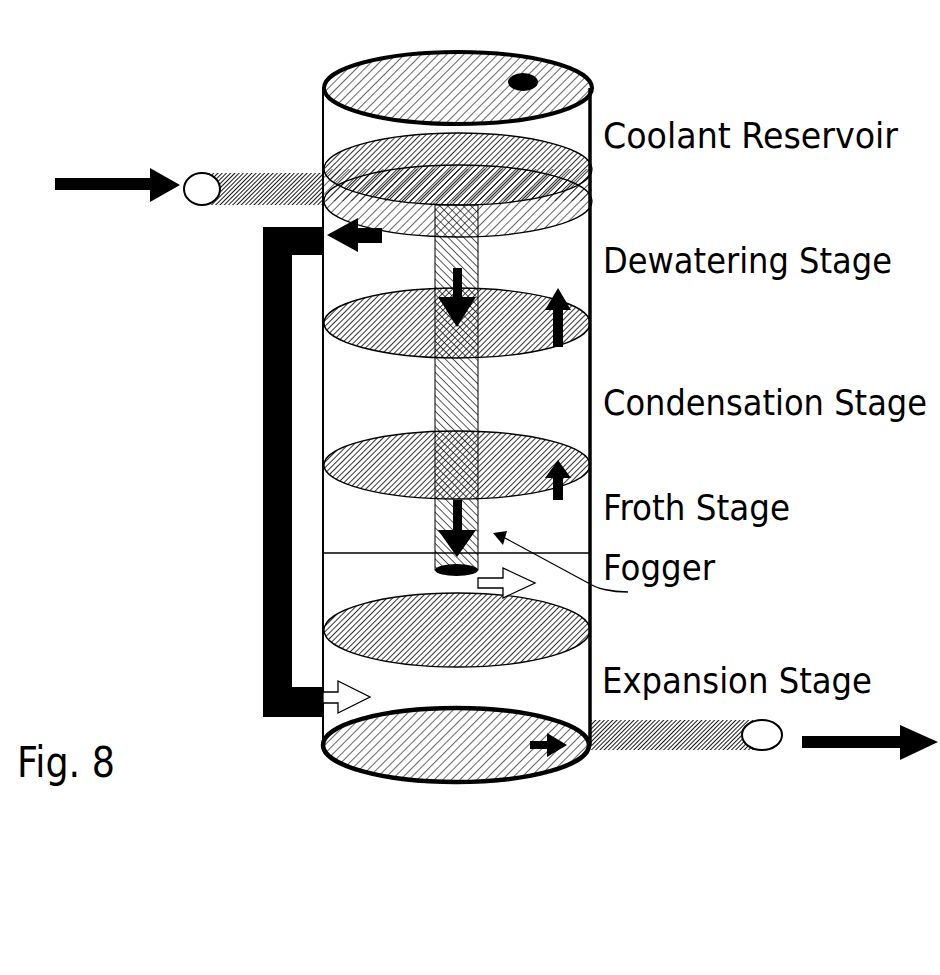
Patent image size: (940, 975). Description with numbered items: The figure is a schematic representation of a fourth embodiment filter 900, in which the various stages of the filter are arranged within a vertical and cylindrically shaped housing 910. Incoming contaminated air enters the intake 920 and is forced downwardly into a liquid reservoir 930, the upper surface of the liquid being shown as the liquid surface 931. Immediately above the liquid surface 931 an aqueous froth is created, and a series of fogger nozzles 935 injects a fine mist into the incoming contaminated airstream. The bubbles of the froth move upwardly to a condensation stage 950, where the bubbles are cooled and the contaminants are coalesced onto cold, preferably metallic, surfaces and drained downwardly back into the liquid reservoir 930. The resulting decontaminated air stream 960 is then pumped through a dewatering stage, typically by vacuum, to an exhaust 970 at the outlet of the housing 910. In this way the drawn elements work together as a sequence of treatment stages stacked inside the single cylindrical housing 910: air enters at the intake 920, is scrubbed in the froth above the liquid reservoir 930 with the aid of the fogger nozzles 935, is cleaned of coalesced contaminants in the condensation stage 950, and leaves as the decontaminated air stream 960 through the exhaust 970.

The filter 900 is at (594, 67).
The housing 910 is at (594, 108).
The intake 920 is at (228, 173).
The liquid reservoir 930 is at (397, 594).
The liquid surface 931 is at (347, 550).
The fogger nozzles 935 is at (425, 508).
The condensation stage 950 is at (564, 389).
The decontaminated air stream 960 is at (357, 248).
The exhaust 970 is at (725, 752).